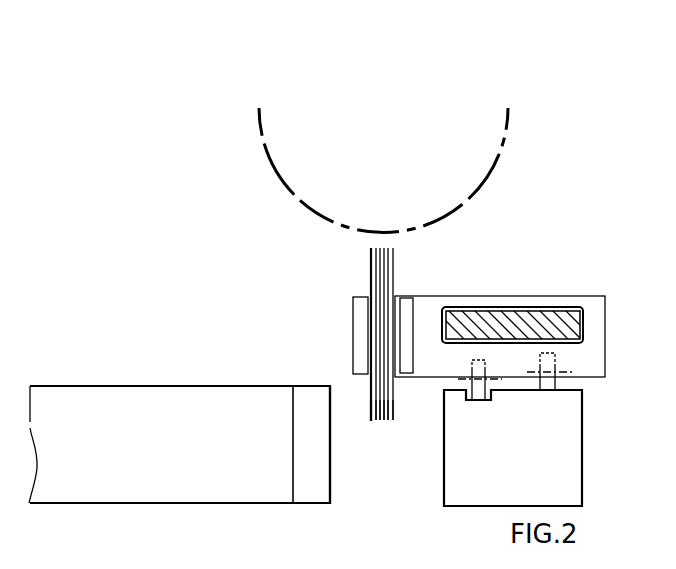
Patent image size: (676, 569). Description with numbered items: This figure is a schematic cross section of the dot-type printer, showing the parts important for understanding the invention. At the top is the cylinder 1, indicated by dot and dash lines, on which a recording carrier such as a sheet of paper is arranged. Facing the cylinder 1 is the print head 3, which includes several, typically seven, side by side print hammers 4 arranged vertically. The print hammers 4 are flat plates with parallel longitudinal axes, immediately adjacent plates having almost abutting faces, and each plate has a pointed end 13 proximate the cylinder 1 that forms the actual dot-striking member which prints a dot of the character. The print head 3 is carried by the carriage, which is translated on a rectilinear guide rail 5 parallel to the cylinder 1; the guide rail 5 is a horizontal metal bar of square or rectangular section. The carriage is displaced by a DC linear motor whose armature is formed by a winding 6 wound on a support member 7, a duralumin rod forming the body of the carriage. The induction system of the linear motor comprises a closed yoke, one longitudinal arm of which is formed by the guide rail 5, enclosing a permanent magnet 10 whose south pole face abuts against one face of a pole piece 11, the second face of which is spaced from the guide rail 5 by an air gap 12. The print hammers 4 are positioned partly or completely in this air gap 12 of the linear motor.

The cylinder 1 is at (258, 109).
The print head 3 is at (403, 294).
The print hammers 4 is at (388, 421).
The guide rail 5 is at (444, 448).
The winding 6 is at (545, 306).
The support member 7 is at (509, 307).
The permanent magnet 10 is at (186, 457).
The pole piece 11 is at (305, 386).
The air gap 12 is at (361, 459).
The pointed end 13 is at (372, 251).